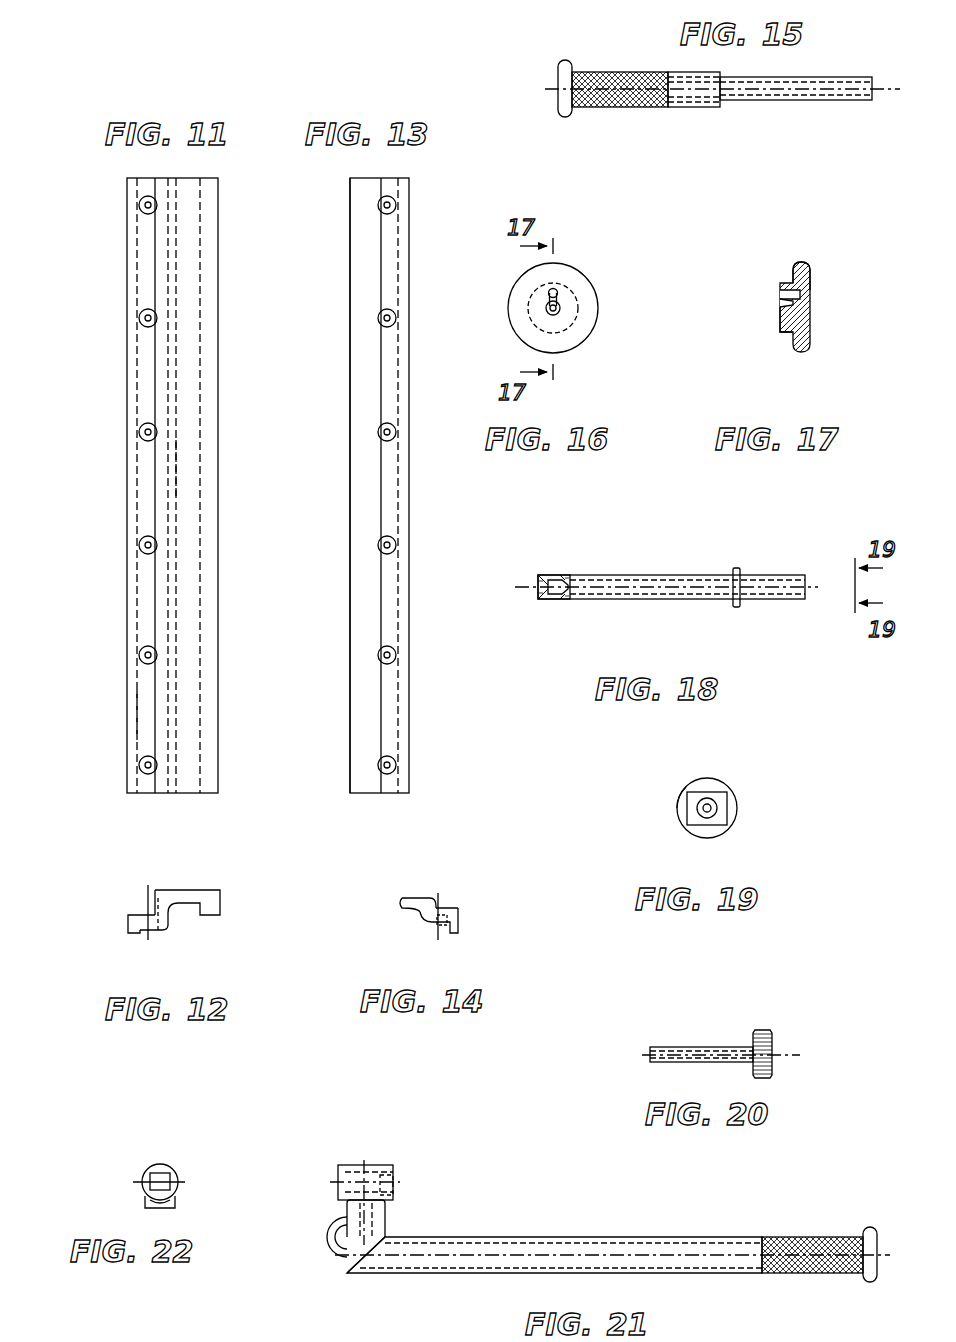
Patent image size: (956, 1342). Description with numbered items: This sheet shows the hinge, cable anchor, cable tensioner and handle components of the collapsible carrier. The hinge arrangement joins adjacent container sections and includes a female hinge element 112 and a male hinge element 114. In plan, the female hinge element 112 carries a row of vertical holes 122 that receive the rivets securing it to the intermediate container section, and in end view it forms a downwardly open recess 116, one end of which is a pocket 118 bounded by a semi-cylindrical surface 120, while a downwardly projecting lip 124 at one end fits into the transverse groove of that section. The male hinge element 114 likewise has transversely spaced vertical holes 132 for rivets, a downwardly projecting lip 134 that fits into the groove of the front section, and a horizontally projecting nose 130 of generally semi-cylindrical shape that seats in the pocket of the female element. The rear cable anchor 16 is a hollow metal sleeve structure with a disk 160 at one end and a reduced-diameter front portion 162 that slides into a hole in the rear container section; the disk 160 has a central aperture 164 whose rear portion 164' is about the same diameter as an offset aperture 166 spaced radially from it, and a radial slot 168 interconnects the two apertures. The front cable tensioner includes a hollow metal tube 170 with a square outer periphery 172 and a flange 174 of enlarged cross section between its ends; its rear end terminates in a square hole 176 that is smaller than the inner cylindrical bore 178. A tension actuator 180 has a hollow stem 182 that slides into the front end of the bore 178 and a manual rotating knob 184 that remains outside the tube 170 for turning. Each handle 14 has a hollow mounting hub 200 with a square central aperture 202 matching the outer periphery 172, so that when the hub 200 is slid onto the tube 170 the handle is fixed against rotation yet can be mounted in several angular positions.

In FIG. 21, the handle 14 is at (512, 1236).
In FIG. 15, the rear cable anchor 16 is at (622, 118).
In FIG. 16, the rear cable anchor 16 is at (600, 303).
In FIG. 11, the female hinge element 112 is at (218, 640).
In FIG. 12, the female hinge element 112 is at (210, 893).
In FIG. 13, the male hinge element 114 is at (355, 518).
In FIG. 14, the male hinge element 114 is at (420, 898).
In FIG. 11, the downwardly open recess 116 is at (188, 470).
In FIG. 12, the downwardly open recess 116 is at (193, 910).
In FIG. 12, the pocket 118 is at (178, 912).
In FIG. 12, the semi-cylindrical surface 120 is at (165, 890).
In FIG. 11, the vertical holes 122 is at (139, 205).
In FIG. 12, the vertical holes 122 is at (147, 913).
In FIG. 11, the downwardly projecting lip 124 is at (132, 710).
In FIG. 12, the downwardly projecting lip 124 is at (132, 932).
In FIG. 13, the horizontally projecting nose 130 is at (355, 672).
In FIG. 14, the horizontally projecting nose 130 is at (408, 912).
In FIG. 13, the vertical holes 132 is at (397, 655).
In FIG. 14, the vertical holes 132 is at (445, 910).
In FIG. 14, the downwardly projecting lip 134 is at (458, 928).
In FIG. 15, the disk 160 is at (556, 76).
In FIG. 16, the disk 160 is at (505, 277).
In FIG. 17, the disk 160 is at (810, 342).
In FIG. 15, the front portion of sleeve structure 162 is at (775, 102).
In FIG. 16, the central aperture 164 is at (601, 329).
In FIG. 17, the rear portion of central aperture 164' is at (836, 292).
In FIG. 16, the offset aperture 166 is at (556, 289).
In FIG. 17, the offset aperture 166 is at (782, 295).
In FIG. 17, the radial slot 168 is at (811, 289).
In FIG. 18, the hollow metal tube 170 is at (609, 564).
In FIG. 19, the hollow metal tube 170 is at (784, 807).
In FIG. 18, the outer periphery 172 is at (673, 575).
In FIG. 19, the outer periphery 172 is at (680, 820).
In FIG. 18, the flange 174 is at (736, 568).
In FIG. 19, the flange 174 is at (728, 832).
In FIG. 18, the square hole 176 is at (539, 585).
In FIG. 19, the square hole 176 is at (716, 797).
In FIG. 18, the inner cylindrical bore 178 is at (557, 598).
In FIG. 19, the inner cylindrical bore 178 is at (690, 800).
In FIG. 20, the tension actuator 180 is at (714, 1029).
In FIG. 20, the hollow stem 182 is at (667, 1047).
In FIG. 20, the manual rotating knob 184 is at (774, 1046).
In FIG. 21, the mounting hub 200 is at (380, 1165).
In FIG. 22, the mounting hub 200 is at (148, 1172).
In FIG. 21, the central aperture 202 is at (393, 1190).
In FIG. 22, the central aperture 202 is at (158, 1172).